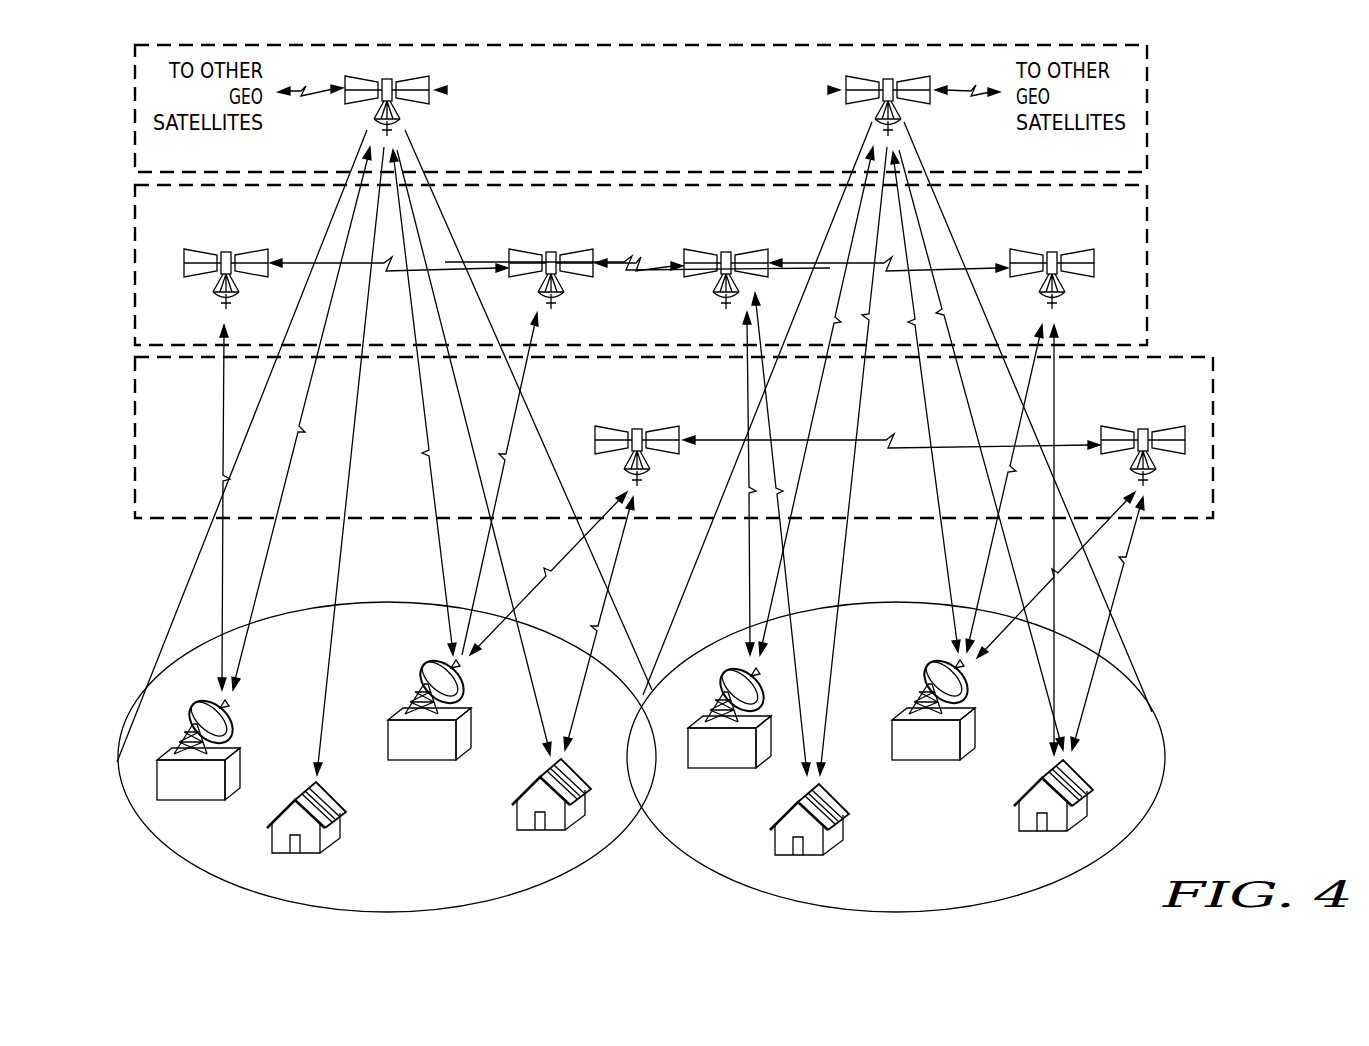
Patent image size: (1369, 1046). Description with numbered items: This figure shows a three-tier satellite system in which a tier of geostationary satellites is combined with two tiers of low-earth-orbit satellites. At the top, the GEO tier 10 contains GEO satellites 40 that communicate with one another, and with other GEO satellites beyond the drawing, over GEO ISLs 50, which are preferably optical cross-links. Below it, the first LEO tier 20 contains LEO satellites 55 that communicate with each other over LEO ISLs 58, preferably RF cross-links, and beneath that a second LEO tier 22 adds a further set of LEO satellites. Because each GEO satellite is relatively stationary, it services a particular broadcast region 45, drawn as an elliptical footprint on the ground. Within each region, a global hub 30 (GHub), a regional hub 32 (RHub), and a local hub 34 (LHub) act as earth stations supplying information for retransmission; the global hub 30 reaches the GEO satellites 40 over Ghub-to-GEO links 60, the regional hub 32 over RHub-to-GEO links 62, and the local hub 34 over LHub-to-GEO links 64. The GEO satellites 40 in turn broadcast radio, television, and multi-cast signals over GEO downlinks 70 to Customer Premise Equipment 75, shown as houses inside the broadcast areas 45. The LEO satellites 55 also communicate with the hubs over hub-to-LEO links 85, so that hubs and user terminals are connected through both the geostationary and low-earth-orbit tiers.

The GEO tier 10 is at (1147, 147).
The LEO tier 20 is at (1147, 325).
The second LEO tier 22 is at (1213, 496).
The global hub 30 is at (190, 800).
The regional hub 32 is at (722, 768).
The local hub 34 is at (925, 760).
The GEO satellite 40 is at (428, 104).
The broadcast region 45 is at (411, 870).
The GEO ISL 50 is at (639, 177).
The LEO satellite 55 is at (228, 246).
The LEO ISL 58 is at (639, 284).
The Ghub-to-GEO link 60 is at (276, 567).
The RHub-to-GEO link 62 is at (824, 406).
The LHub-to-GEO link 64 is at (948, 561).
The GEO downlink 70 is at (332, 661).
The Customer Premise Equipment 75 is at (300, 855).
The hub-to-LEO link 85 is at (222, 412).